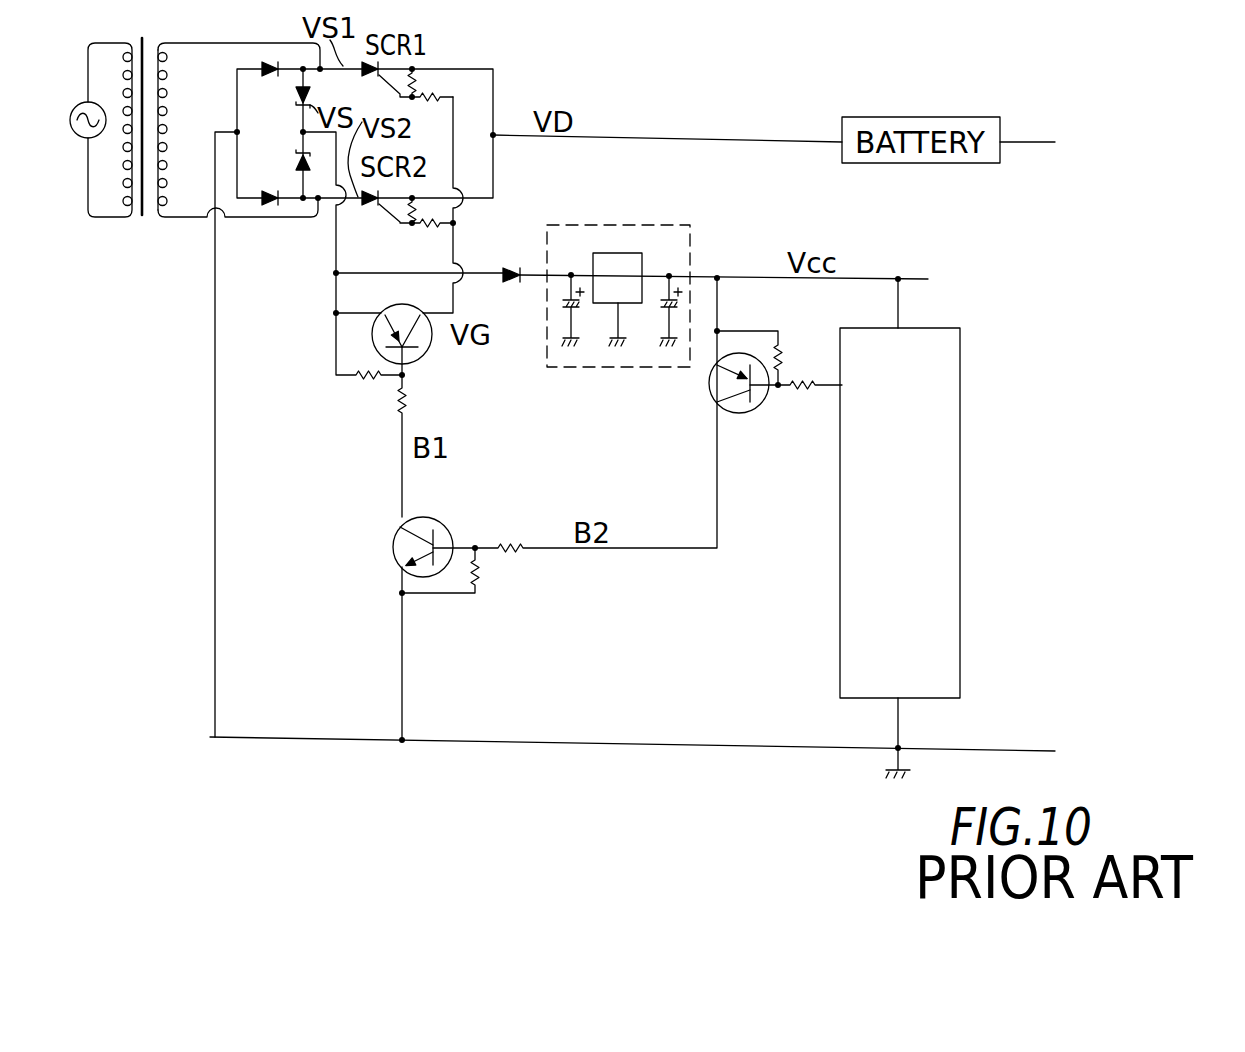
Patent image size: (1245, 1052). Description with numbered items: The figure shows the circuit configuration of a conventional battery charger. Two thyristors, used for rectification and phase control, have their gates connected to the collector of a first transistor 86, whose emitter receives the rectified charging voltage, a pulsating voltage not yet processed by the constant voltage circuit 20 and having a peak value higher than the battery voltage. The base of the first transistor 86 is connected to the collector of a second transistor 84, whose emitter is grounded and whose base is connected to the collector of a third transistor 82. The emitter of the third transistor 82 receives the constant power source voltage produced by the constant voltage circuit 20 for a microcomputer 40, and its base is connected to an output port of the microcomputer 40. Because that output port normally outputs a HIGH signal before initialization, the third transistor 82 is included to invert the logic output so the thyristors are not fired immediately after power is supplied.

The constant voltage circuit 20 is at (577, 225).
The microcomputer 40 is at (910, 643).
The third transistor 82 is at (775, 390).
The second transistor 84 is at (436, 541).
The first transistor 86 is at (415, 410).